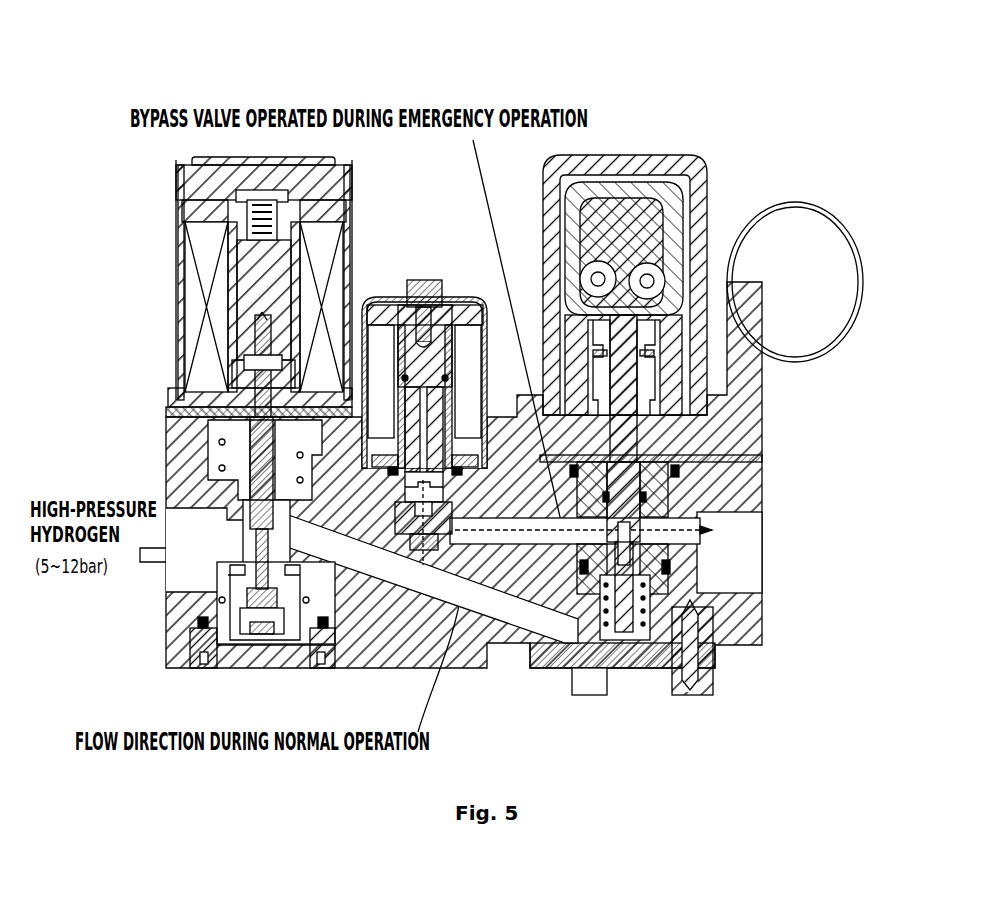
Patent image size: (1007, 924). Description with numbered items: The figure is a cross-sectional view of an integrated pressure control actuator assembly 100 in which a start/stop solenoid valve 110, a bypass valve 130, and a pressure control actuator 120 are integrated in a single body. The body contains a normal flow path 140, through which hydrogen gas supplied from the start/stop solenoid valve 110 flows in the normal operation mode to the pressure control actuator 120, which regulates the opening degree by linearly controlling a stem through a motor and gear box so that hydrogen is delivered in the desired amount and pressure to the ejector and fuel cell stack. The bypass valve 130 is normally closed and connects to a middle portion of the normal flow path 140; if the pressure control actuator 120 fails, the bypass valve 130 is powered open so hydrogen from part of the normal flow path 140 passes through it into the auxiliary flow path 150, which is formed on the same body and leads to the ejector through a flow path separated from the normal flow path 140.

The integrated pressure control actuator assembly 100 is at (624, 118).
The start/stop solenoid valve 110 is at (176, 268).
The pressure control actuator 120 is at (660, 155).
The bypass valve 130 is at (425, 290).
The normal flow path 140 is at (478, 603).
The auxiliary flow path 150 is at (517, 537).